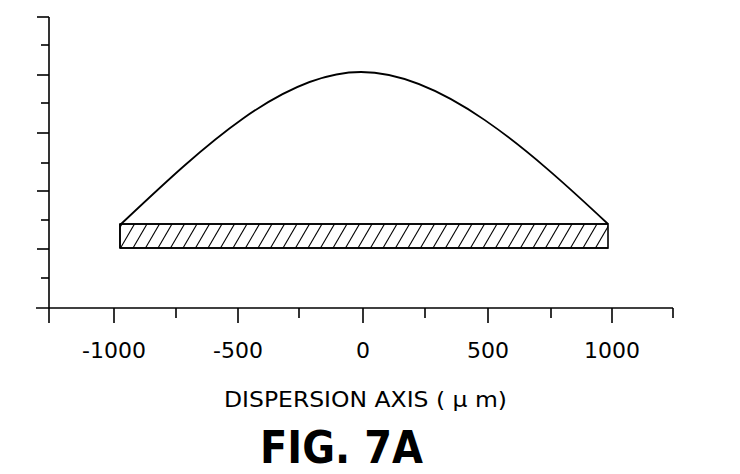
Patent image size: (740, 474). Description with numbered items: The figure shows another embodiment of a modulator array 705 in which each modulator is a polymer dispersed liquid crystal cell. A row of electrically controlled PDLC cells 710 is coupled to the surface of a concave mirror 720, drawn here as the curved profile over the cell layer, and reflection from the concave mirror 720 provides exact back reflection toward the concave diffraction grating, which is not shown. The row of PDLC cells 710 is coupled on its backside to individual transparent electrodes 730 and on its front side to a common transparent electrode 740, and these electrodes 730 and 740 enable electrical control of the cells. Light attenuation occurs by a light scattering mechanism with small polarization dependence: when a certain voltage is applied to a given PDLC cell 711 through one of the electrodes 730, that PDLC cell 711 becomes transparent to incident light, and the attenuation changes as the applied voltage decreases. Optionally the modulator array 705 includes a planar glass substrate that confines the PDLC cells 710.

The modulator array 705 is at (500, 64).
The PDLC cells 710 is at (104, 233).
The PDLC cell 711 is at (233, 240).
The concave mirror 720 is at (370, 133).
The individual transparent electrodes 730 is at (412, 224).
The common transparent electrode 740 is at (493, 248).